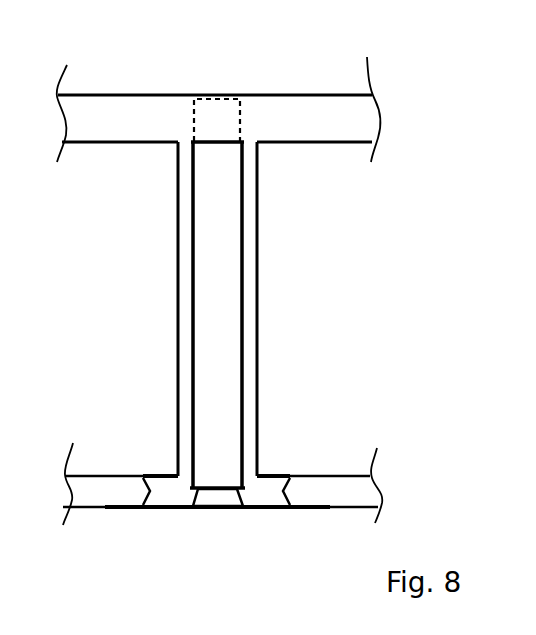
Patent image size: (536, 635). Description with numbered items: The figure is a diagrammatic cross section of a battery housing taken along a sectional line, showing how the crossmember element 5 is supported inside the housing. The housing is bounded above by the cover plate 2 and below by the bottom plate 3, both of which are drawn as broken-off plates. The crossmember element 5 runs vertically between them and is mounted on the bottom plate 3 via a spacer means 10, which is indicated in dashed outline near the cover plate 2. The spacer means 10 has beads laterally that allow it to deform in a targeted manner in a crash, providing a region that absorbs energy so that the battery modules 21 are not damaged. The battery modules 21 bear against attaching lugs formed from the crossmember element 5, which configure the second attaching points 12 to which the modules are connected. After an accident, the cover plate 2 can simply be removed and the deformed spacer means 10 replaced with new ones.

The cover plate 2 is at (120, 93).
The spacer means 10 is at (210, 112).
The crossmember element 5 is at (193, 320).
The battery module 21 is at (260, 238).
The second attaching point 12 is at (143, 483).
The bottom plate 3 is at (350, 510).